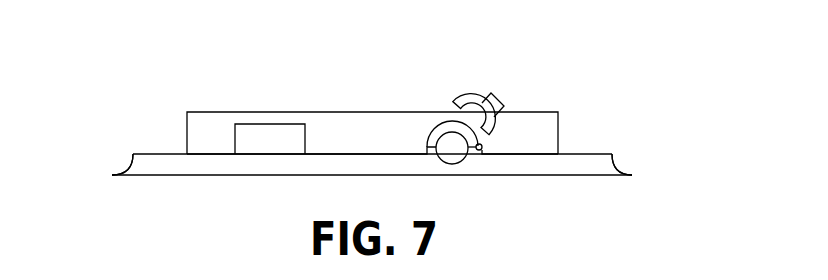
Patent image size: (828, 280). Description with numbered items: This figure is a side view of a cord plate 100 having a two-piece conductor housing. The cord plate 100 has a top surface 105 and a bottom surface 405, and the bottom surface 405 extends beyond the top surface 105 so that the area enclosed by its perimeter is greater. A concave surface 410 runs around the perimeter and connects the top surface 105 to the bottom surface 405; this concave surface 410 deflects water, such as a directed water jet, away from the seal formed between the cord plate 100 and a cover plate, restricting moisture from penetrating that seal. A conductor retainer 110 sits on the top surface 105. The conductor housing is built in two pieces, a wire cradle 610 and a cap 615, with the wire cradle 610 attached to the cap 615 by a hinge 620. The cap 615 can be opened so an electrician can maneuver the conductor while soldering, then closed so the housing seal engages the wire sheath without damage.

The cord plate 100 is at (213, 41).
The top surface 105 is at (161, 154).
The conductor retainer 110 is at (265, 123).
The bottom surface 405 is at (275, 176).
The concave surface 410 is at (123, 173).
The wire cradle 610 is at (457, 164).
The cap 615 is at (461, 98).
The hinge 620 is at (482, 146).